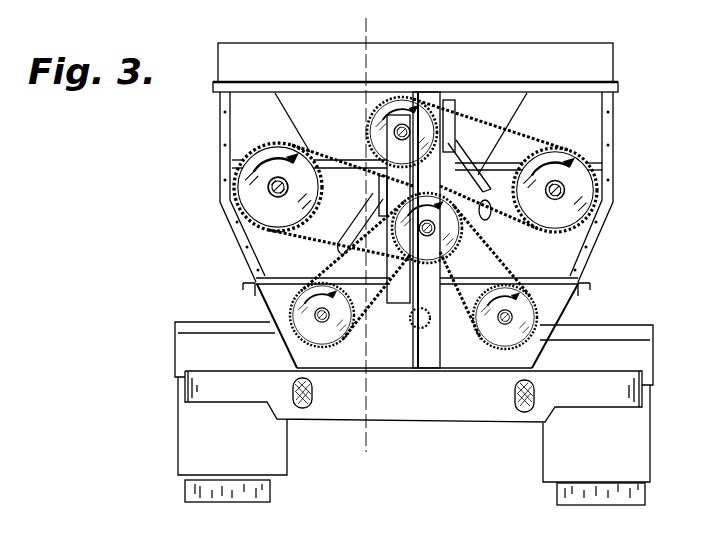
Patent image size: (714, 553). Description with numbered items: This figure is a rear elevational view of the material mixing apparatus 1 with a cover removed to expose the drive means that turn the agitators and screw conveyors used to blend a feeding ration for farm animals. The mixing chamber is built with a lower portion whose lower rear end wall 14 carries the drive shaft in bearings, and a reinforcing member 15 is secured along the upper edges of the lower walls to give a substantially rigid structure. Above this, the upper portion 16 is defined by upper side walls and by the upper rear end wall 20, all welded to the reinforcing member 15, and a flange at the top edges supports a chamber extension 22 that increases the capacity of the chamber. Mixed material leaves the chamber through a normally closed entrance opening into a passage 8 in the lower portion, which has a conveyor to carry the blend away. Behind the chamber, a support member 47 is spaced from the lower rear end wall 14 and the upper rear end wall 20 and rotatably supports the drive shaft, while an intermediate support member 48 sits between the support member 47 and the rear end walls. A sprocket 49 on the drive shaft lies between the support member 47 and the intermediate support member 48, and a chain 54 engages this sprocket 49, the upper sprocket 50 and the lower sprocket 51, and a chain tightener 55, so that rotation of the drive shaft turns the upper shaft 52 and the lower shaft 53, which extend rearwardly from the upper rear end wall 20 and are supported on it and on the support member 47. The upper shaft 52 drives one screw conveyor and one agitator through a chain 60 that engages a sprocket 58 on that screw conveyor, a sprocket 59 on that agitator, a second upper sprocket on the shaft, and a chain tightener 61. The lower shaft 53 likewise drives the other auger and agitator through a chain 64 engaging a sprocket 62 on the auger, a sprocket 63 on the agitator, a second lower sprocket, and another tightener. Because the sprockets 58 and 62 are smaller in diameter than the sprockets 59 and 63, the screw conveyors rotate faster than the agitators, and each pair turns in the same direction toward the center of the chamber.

The material mixing apparatus 1 is at (524, 38).
The passage 8 is at (340, 32).
The lower rear end wall 14 is at (552, 316).
The reinforcing member 15 is at (247, 284).
The upper portion 16 is at (441, 228).
The upper rear end wall 20 is at (590, 108).
The chamber extension 22 is at (582, 54).
The support member 47 is at (408, 353).
The intermediate support member 48 is at (366, 154).
The sprocket 49 is at (426, 322).
The upper sprocket 50 is at (428, 122).
The lower sprocket 51 is at (404, 250).
The upper shaft 52 is at (405, 98).
The lower shaft 53 is at (496, 236).
The chain 54 is at (460, 258).
The chain tightener 55 is at (485, 220).
The sprocket 58 is at (345, 334).
The sprocket 59 is at (585, 191).
The chain 60 is at (508, 138).
The chain tightener 61 is at (340, 244).
The sprocket 62 is at (512, 338).
The sprocket 63 is at (238, 184).
The chain 64 is at (298, 234).